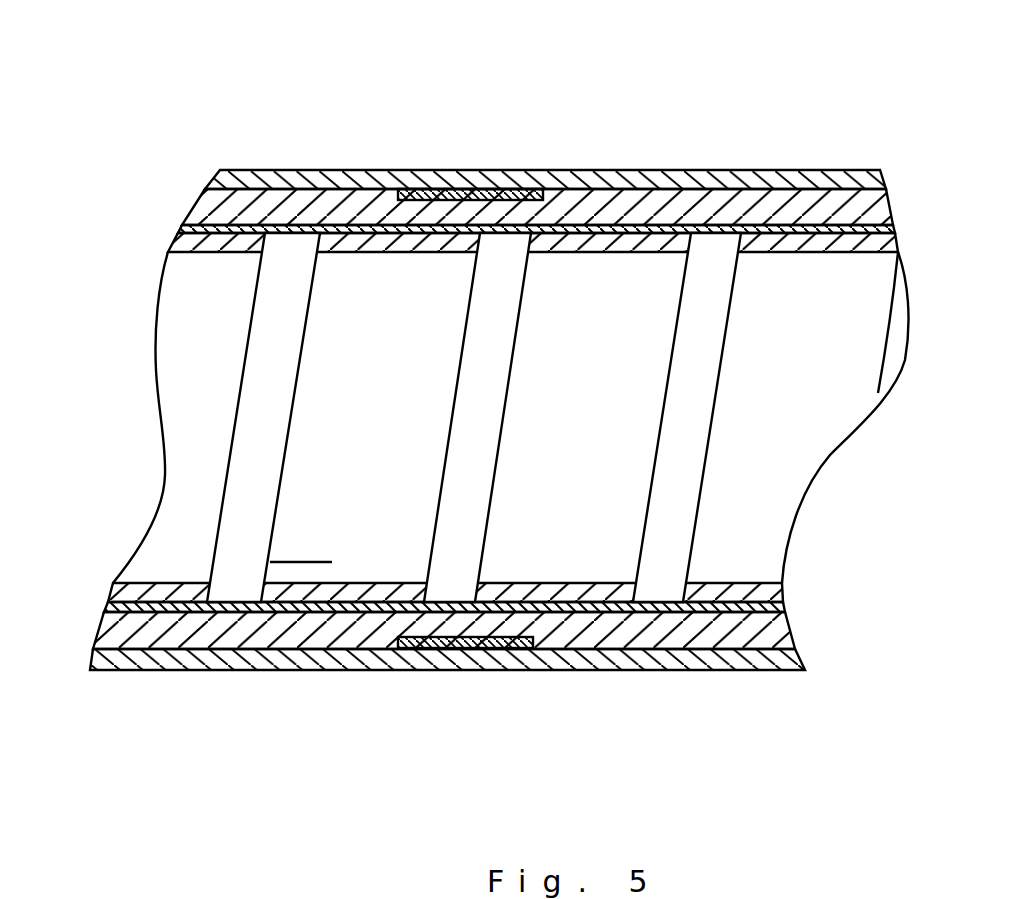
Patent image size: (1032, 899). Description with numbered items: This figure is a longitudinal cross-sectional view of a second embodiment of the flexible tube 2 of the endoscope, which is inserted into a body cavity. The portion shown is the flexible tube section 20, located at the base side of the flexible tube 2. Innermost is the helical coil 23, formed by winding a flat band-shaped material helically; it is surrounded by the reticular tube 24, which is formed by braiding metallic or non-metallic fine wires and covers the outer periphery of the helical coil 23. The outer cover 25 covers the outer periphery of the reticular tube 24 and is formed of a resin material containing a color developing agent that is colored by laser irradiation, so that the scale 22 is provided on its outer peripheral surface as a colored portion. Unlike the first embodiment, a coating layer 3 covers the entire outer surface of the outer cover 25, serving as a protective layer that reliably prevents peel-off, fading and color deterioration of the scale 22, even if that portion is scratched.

The flexible tube 2 is at (834, 68).
The flexible tube section 20 is at (804, 154).
The coating layer 3 is at (872, 180).
The scale 22 is at (471, 190).
The helical coil 23 is at (365, 522).
The reticular tube 24 is at (182, 230).
The outer cover 25 is at (618, 206).